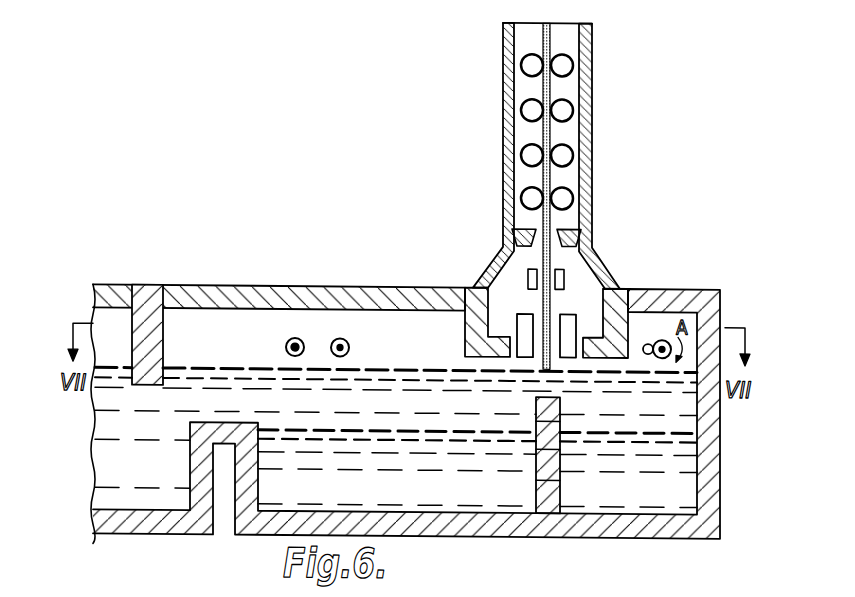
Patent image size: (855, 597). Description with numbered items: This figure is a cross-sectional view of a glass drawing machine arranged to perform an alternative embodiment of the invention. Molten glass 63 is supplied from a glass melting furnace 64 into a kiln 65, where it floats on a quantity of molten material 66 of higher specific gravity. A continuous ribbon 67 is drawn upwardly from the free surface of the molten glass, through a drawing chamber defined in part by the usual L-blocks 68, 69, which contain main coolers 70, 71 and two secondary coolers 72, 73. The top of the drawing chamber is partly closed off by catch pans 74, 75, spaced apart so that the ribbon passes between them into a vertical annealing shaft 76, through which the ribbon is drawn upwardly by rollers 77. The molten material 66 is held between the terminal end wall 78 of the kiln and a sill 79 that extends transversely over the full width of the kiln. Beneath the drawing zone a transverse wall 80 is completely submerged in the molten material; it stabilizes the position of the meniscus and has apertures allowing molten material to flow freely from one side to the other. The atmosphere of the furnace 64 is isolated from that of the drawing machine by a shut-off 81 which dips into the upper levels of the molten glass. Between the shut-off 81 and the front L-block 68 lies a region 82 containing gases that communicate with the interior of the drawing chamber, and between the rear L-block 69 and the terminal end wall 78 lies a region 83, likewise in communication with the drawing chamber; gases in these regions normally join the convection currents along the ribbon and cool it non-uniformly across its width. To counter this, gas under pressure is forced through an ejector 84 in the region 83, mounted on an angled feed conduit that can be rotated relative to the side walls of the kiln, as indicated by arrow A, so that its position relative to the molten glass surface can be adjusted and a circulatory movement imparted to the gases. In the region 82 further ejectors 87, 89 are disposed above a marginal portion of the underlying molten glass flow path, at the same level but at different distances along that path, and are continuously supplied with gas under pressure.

The molten glass 63 is at (407, 413).
The glass melting furnace 64 is at (122, 348).
The kiln 65 is at (397, 542).
The molten material 66 is at (413, 490).
The continuous ribbon 67 is at (549, 303).
The front L-block 68 is at (478, 294).
The rear L-block 69 is at (612, 302).
The main cooler 70 is at (527, 326).
The main cooler 71 is at (566, 326).
The secondary cooler 72 is at (529, 268).
The secondary cooler 73 is at (564, 268).
The catch pan 74 is at (512, 228).
The catch pan 75 is at (592, 222).
The vertical annealing shaft 76 is at (543, 51).
The rollers 77 is at (563, 197).
The terminal end wall 78 is at (707, 420).
The sill 79 is at (198, 467).
The transverse wall 80 is at (535, 493).
The shut-off 81 is at (148, 338).
The region 82 is at (262, 347).
The region 83 is at (647, 333).
The ejector 84 is at (666, 341).
The ejector 87 is at (345, 342).
The ejector 89 is at (294, 339).